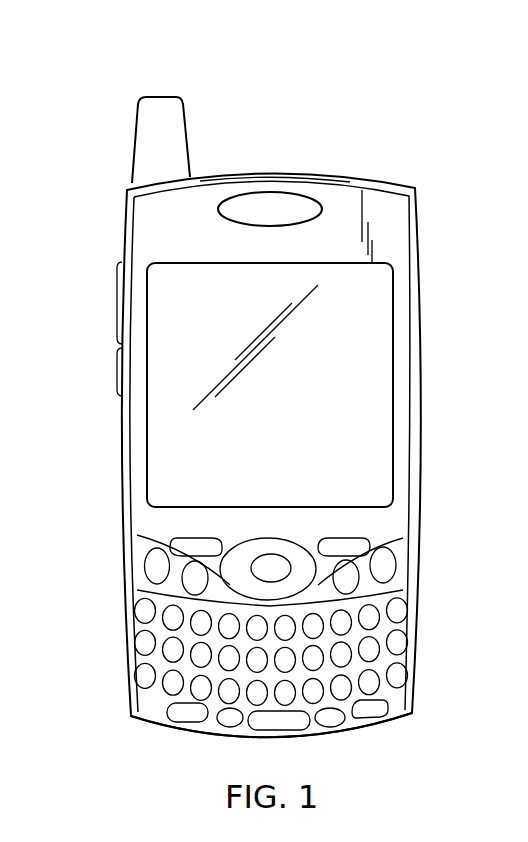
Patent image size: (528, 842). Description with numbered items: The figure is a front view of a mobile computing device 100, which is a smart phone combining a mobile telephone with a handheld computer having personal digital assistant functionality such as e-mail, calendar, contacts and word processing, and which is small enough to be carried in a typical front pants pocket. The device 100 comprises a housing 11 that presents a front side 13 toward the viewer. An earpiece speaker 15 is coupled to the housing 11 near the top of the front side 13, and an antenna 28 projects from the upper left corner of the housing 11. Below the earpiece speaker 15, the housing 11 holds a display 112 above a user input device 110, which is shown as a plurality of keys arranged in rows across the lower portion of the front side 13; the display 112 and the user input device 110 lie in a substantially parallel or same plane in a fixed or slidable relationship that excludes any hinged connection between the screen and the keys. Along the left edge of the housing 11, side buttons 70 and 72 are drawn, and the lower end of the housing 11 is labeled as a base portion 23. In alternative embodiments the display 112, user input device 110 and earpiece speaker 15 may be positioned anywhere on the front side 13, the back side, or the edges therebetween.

The mobile computing device 100 is at (272, 401).
The housing 11 is at (387, 213).
The front side 13 is at (182, 239).
The earpiece speaker 15 is at (268, 207).
The antenna 28 is at (188, 132).
The side button 70 is at (118, 282).
The side button 72 is at (118, 380).
The user input device 110 is at (397, 643).
The display 112 is at (377, 348).
The base portion 23 is at (405, 718).